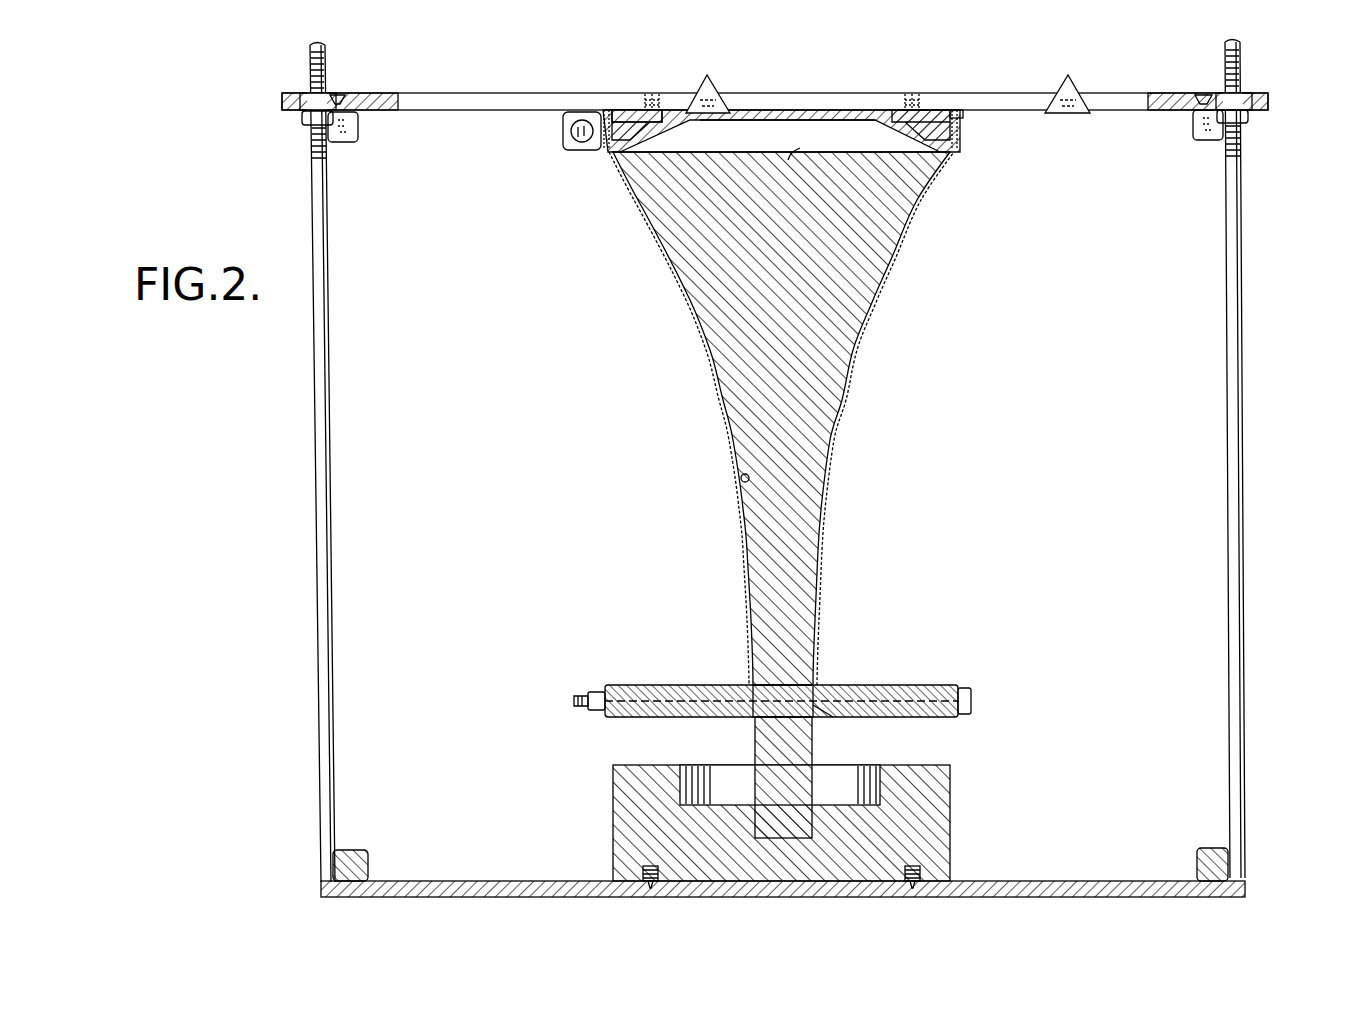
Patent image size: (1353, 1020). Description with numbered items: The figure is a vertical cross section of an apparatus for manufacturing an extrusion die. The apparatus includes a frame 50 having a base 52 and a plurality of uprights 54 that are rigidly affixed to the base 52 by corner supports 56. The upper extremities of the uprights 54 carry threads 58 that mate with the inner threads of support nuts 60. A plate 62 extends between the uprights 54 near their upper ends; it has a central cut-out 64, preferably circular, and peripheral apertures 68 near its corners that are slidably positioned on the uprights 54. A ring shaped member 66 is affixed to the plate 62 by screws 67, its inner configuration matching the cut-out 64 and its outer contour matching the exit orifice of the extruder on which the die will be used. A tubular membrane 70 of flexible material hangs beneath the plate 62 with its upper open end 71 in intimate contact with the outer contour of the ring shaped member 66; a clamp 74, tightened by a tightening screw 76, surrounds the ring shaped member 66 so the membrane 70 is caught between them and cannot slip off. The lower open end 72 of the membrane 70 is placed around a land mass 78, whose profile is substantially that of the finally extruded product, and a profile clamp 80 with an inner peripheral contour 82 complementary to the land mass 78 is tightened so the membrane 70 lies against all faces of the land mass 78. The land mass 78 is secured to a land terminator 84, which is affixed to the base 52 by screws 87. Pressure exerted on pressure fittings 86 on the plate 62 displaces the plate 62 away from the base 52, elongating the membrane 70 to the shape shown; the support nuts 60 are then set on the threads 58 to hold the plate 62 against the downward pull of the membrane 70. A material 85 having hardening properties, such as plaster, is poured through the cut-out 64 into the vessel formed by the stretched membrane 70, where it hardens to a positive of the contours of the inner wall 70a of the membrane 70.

The frame 50 is at (302, 521).
The base 52 is at (486, 881).
The uprights 54 is at (325, 430).
The corner supports 56 is at (362, 850).
The threads 58 is at (312, 132).
The support nuts 60 is at (301, 118).
The plate 62 is at (490, 92).
The central cut-out 64 is at (942, 108).
The ring shaped member 66 is at (622, 118).
The screws 67 is at (657, 98).
The peripheral apertures 68 is at (308, 100).
The tubular membrane 70 is at (781, 418).
The inner wall 70a is at (743, 486).
The upper open end 71 is at (964, 114).
The lower open end 72 is at (815, 690).
The clamp 74 is at (963, 154).
The tightening screw 76 is at (576, 135).
The land mass 78 is at (768, 740).
The profile clamp 80 is at (684, 688).
The inner peripheral contour 82 is at (820, 706).
The land terminator 84 is at (950, 800).
The material having hardening properties 85 is at (822, 358).
The pressure fittings 86 is at (718, 88).
The screws 87 is at (643, 873).